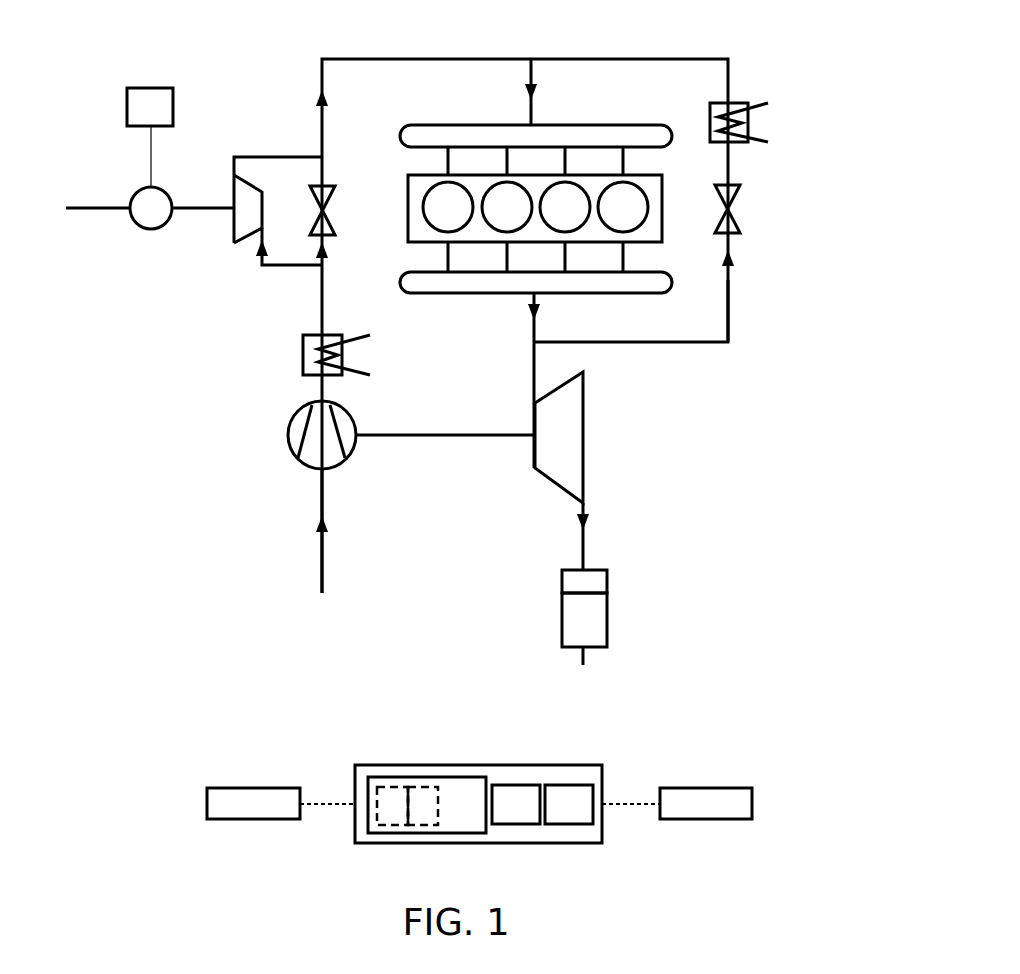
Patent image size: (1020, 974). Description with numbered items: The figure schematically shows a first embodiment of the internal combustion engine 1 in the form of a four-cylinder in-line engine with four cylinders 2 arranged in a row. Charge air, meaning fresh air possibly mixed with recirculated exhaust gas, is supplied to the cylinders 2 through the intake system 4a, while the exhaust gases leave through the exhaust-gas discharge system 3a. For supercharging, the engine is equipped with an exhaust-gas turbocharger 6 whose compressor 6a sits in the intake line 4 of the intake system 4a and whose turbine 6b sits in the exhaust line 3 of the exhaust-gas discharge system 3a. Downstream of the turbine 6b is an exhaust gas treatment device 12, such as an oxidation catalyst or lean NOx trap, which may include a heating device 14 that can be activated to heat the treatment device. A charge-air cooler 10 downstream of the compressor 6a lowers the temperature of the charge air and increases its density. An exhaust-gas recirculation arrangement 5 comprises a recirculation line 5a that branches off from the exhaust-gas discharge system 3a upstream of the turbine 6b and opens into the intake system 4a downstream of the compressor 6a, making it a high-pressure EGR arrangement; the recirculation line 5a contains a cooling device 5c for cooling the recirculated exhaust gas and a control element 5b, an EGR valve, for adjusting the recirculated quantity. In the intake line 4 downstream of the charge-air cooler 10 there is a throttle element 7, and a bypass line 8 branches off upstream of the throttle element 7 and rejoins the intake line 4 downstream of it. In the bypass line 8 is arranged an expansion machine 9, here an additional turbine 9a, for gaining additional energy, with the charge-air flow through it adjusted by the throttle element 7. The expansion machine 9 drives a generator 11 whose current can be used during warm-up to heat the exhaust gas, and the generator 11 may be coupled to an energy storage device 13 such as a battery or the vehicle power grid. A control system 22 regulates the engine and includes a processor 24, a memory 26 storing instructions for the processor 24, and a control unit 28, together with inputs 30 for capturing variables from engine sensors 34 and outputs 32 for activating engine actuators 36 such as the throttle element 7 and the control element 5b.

The internal combustion engine 1 is at (222, 46).
The cylinders 2 is at (503, 198).
The exhaust line 3 is at (585, 552).
The exhaust-gas discharge system 3a is at (674, 450).
The intake line 4 is at (320, 547).
The intake system 4a is at (228, 448).
The exhaust-gas recirculation arrangement 5 is at (831, 94).
The recirculation line 5a is at (730, 312).
The control element 5b is at (737, 198).
The cooling device 5c is at (740, 145).
The exhaust-gas turbocharger 6 is at (437, 410).
The compressor 6a is at (313, 423).
The turbine 6b is at (578, 427).
The throttle element 7 is at (323, 197).
The bypass line 8 is at (215, 188).
The expansion machine 9 is at (185, 229).
The additional turbine 9a is at (245, 220).
The charge-air cooler 10 is at (317, 352).
The generator 11 is at (150, 205).
The exhaust gas treatment device 12 is at (608, 625).
The energy storage device 13 is at (140, 88).
The heating device 14 is at (608, 578).
The control system 22 is at (495, 790).
The processor 24 is at (590, 765).
The memory 26 is at (516, 804).
The control unit 28 is at (427, 805).
The inputs 30 is at (423, 806).
The outputs 32 is at (392, 806).
The engine sensors 34 is at (268, 788).
The engine actuators 36 is at (720, 788).